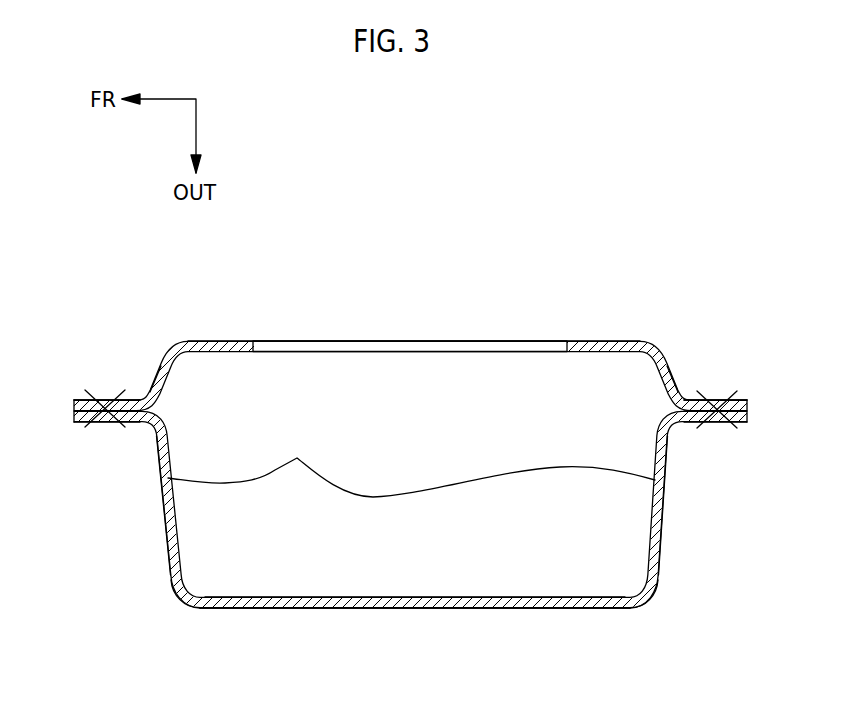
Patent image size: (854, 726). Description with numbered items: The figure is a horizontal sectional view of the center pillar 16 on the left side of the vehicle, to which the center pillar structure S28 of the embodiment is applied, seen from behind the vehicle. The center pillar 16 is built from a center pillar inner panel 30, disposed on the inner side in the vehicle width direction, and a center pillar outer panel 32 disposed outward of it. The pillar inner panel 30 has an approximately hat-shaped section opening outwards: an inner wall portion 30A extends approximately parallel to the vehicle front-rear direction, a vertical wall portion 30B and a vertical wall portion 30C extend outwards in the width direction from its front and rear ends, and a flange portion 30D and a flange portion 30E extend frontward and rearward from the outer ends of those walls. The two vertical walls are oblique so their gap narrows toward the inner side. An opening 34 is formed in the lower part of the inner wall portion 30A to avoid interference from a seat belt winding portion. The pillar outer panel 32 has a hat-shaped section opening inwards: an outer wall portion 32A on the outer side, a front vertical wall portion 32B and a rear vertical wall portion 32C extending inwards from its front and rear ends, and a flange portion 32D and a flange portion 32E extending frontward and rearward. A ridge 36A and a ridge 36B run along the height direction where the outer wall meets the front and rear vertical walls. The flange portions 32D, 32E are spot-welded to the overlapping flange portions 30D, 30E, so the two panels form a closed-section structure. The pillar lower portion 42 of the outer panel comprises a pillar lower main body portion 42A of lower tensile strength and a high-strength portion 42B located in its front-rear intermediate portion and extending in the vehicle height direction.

The center pillar 16 is at (626, 626).
The center pillar inner panel 30 is at (233, 332).
The inner wall portion 30A is at (607, 341).
The vertical wall portion 30B is at (158, 367).
The vertical wall portion 30C is at (658, 365).
The flange portion 30D is at (105, 402).
The flange portion 30E is at (714, 407).
The center pillar outer panel 32 is at (224, 620).
The outer wall portion 32A is at (493, 611).
The front vertical wall portion 32B is at (160, 503).
The rear vertical wall portion 32C is at (657, 502).
The flange portion 32D is at (83, 423).
The flange portion 32E is at (737, 423).
The opening 34 is at (257, 341).
The ridge 36A is at (178, 601).
The ridge 36B is at (640, 601).
The pillar lower portion 42 is at (411, 549).
The pillar lower main body portion 42A is at (411, 464).
The high-strength portion 42B is at (380, 608).
The center pillar structure S28 is at (297, 637).